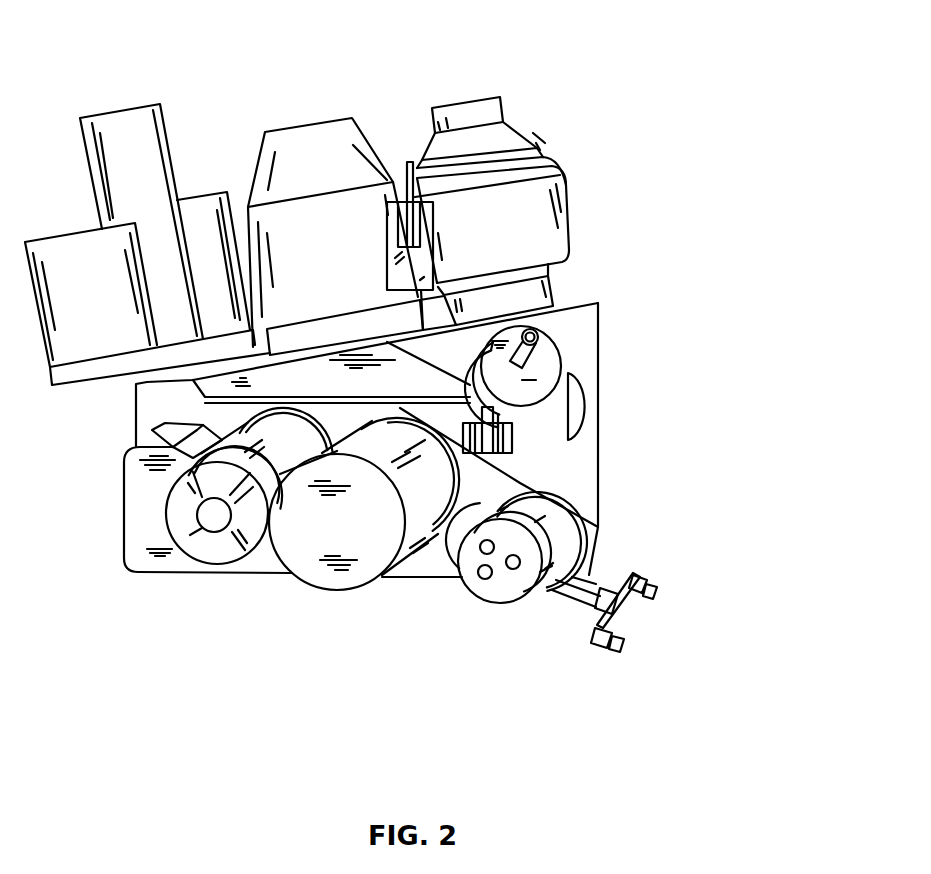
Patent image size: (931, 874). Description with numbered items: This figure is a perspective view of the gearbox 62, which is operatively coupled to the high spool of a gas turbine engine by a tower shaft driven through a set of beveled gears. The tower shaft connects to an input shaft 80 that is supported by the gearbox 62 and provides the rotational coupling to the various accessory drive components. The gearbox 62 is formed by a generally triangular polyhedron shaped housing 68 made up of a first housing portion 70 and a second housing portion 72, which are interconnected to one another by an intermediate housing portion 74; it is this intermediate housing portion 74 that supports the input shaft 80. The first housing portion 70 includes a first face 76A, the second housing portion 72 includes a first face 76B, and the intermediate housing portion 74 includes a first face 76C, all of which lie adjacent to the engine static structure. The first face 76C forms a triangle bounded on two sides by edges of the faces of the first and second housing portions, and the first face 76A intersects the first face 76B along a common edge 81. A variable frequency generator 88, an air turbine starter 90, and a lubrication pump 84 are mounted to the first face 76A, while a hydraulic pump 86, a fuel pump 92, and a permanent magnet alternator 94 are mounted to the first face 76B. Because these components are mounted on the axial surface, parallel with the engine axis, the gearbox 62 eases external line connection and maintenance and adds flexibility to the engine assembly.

The gearbox 62 is at (737, 380).
The housing 68 is at (598, 463).
The first housing portion 70 is at (567, 300).
The second housing portion 72 is at (410, 573).
The intermediate housing portion 74 is at (570, 475).
The first face 76A is at (583, 302).
The first face 76B is at (150, 552).
The first face 76C is at (578, 343).
The input shaft 80 is at (577, 343).
The common edge 81 is at (152, 368).
The lubrication pump 84 is at (135, 130).
The hydraulic pump 86 is at (326, 537).
The variable frequency generator 88 is at (315, 145).
The air turbine starter 90 is at (482, 148).
The fuel pump 92 is at (225, 550).
The permanent magnet alternator 94 is at (504, 583).